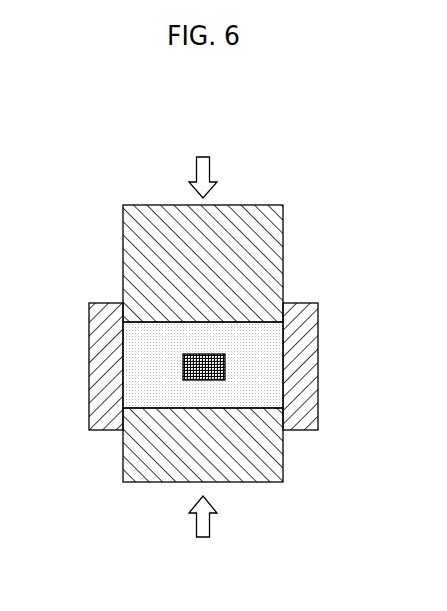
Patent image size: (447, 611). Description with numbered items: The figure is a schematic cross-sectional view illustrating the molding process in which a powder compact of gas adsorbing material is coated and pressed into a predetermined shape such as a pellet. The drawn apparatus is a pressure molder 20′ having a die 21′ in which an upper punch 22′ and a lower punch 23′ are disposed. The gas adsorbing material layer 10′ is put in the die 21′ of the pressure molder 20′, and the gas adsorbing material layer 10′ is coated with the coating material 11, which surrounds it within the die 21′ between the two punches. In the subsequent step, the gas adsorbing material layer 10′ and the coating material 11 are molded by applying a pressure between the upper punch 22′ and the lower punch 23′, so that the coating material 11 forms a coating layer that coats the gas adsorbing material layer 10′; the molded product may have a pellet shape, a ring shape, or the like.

The pressure molder 20′ is at (229, 310).
The upper punch 22′ is at (283, 240).
The lower punch 23′ is at (283, 462).
The die 21′ is at (318, 365).
The coating material 11 is at (137, 340).
The gas adsorbing material layer 10′ is at (183, 368).